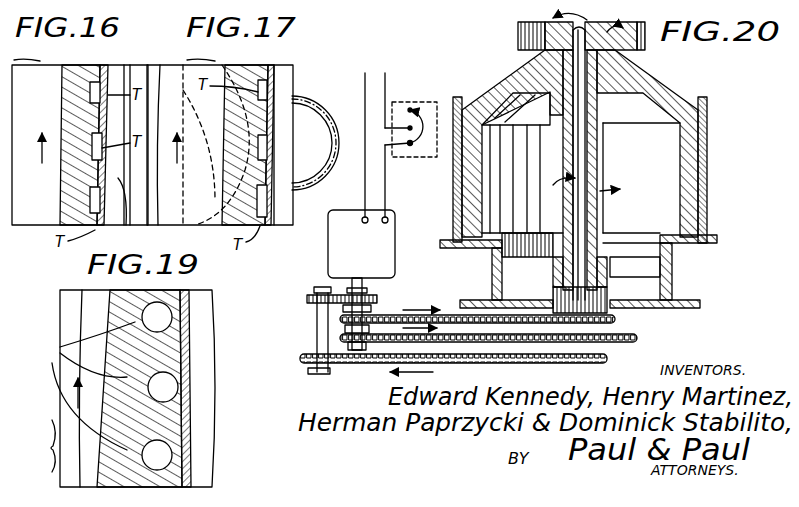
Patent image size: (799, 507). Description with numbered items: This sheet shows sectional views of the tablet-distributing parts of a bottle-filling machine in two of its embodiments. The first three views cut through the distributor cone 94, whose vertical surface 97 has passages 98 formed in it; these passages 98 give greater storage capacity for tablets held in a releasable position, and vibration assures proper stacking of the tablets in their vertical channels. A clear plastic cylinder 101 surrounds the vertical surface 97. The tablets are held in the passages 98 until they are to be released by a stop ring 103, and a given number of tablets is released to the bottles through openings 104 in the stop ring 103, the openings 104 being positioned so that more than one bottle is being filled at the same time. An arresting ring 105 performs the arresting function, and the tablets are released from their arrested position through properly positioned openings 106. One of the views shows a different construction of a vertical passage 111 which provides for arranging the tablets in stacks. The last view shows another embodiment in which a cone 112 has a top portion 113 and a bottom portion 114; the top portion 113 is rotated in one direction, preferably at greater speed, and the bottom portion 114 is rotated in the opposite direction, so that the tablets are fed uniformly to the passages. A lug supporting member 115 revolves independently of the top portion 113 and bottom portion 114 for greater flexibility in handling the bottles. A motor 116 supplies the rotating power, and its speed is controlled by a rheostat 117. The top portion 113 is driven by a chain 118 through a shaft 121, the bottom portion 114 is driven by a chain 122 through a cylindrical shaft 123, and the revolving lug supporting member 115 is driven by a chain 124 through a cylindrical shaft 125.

In FIG. 16, the cone 94 is at (27, 50).
In FIG. 17, the cone 94 is at (201, 50).
In FIG. 19, the cone 94 is at (35, 446).
In FIG. 16, the vertical surface 97 is at (102, 222).
In FIG. 17, the vertical surface 97 is at (262, 132).
In FIG. 16, the passages 98 is at (92, 93).
In FIG. 17, the passages 98 is at (258, 145).
In FIG. 16, the clear plastic cylinder 101 is at (101, 72).
In FIG. 17, the clear plastic cylinder 101 is at (268, 75).
In FIG. 19, the clear plastic cylinder 101 is at (184, 300).
In FIG. 17, the stop ring 103 is at (291, 72).
In FIG. 19, the stop ring 103 is at (200, 316).
In FIG. 17, the openings 104 is at (235, 200).
In FIG. 16, the arresting ring 105 is at (75, 168).
In FIG. 16, the openings 106 is at (124, 80).
In FIG. 19, the vertical passage 111 is at (105, 388).
In FIG. 20, the cone 112 is at (518, 30).
In FIG. 20, the top portion 113 is at (588, 36).
In FIG. 20, the bottom portion 114 is at (672, 100).
In FIG. 20, the lug supporting member 115 is at (674, 272).
In FIG. 20, the motor 116 is at (390, 236).
In FIG. 20, the rheostat 117 is at (430, 102).
In FIG. 20, the chain 118 is at (385, 364).
In FIG. 20, the shaft 121 is at (587, 160).
In FIG. 20, the chain 122 is at (453, 316).
In FIG. 20, the cylindrical shaft 123 is at (600, 210).
In FIG. 20, the chain 124 is at (395, 312).
In FIG. 20, the cylindrical shaft 125 is at (612, 268).